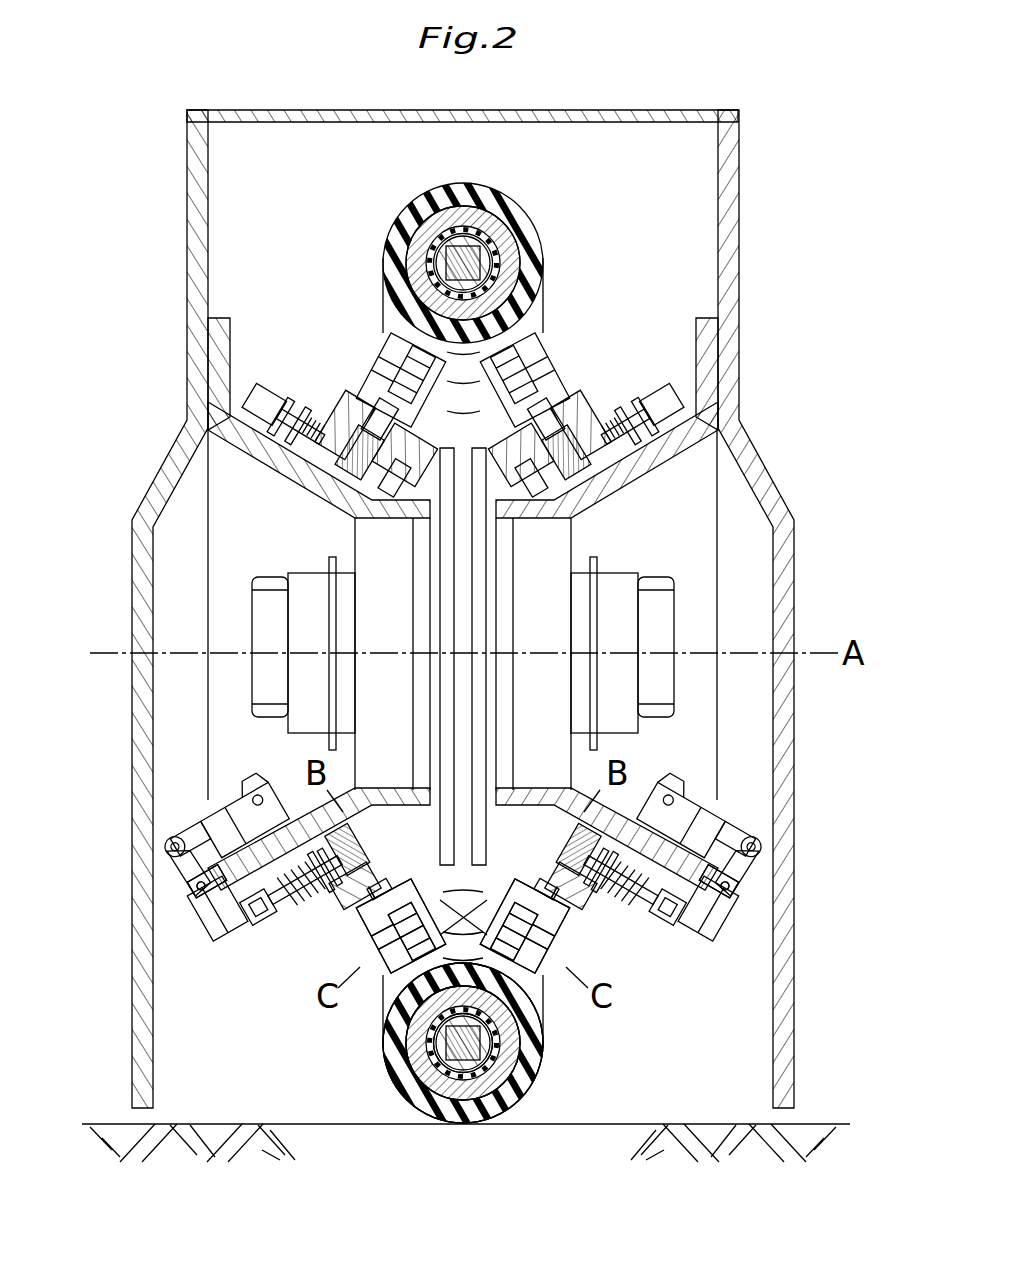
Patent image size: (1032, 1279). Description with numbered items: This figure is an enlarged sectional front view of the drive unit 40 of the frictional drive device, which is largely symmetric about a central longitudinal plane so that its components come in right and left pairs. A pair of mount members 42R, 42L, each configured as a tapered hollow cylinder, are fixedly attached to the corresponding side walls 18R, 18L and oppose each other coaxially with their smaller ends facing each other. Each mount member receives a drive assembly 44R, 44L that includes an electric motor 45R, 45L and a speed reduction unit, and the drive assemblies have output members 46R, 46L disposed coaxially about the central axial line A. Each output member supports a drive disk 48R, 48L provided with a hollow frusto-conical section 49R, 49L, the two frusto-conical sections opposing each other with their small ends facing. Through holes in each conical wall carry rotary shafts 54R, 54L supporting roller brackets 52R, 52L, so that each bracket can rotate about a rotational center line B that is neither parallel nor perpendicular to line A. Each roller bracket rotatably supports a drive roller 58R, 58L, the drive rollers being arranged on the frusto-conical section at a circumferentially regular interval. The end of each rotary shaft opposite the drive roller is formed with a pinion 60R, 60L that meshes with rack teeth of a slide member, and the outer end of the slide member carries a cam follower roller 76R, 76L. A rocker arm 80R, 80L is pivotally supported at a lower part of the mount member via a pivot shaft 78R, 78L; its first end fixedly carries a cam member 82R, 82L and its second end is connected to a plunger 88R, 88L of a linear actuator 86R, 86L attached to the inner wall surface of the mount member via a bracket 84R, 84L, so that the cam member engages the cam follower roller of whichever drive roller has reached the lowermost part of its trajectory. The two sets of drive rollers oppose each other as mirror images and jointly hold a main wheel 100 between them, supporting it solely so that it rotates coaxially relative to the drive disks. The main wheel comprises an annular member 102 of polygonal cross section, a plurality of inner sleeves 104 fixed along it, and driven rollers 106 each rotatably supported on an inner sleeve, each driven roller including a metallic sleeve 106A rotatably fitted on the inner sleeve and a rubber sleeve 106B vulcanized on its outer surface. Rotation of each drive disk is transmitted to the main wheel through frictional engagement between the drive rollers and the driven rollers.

The drive unit 40 is at (645, 292).
The side wall 18R is at (133, 616).
The side wall 18L is at (793, 616).
The mount member 42R is at (249, 455).
The mount member 42L is at (677, 455).
The drive assembly 44R is at (243, 667).
The drive assembly 44L is at (683, 667).
The electric motor 45R is at (277, 578).
The electric motor 45L is at (649, 578).
The output member 46R is at (407, 563).
The output member 46L is at (519, 563).
The drive disk 48R is at (413, 763).
The drive disk 48L is at (513, 763).
The frusto-conical section 49R is at (338, 405).
The frusto-conical section 49L is at (588, 405).
The roller bracket 52R is at (377, 960).
The roller bracket 52L is at (560, 957).
The rotary shaft 54R is at (352, 905).
The rotary shaft 54L is at (572, 905).
The drive roller 58R is at (405, 338).
The drive roller 58L is at (521, 338).
The pinion 60R is at (253, 888).
The pinion 60L is at (673, 888).
The cam follower roller 76R is at (200, 895).
The cam follower roller 76L is at (726, 895).
The pivot shaft 78R is at (232, 897).
The pivot shaft 78L is at (694, 897).
The rocker arm 80R is at (215, 932).
The rocker arm 80L is at (709, 932).
The cam member 82R is at (245, 930).
The cam member 82L is at (673, 927).
The bracket 84R is at (210, 805).
The bracket 84L is at (716, 805).
The linear actuator 86R is at (197, 830).
The linear actuator 86L is at (729, 830).
The plunger 88R is at (170, 848).
The plunger 88L is at (756, 848).
The main wheel 100 is at (522, 1108).
The annular member 102 is at (440, 1077).
The inner sleeve 104 is at (427, 1057).
The driven roller 106 is at (477, 1123).
The metallic sleeve 106A is at (517, 1057).
The rubber sleeve 106B is at (537, 1090).